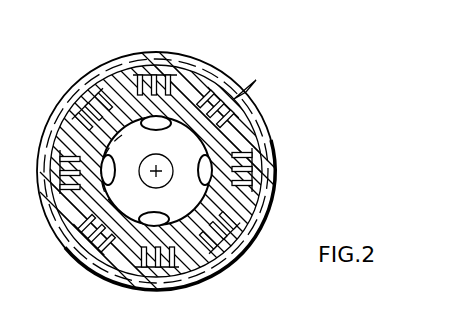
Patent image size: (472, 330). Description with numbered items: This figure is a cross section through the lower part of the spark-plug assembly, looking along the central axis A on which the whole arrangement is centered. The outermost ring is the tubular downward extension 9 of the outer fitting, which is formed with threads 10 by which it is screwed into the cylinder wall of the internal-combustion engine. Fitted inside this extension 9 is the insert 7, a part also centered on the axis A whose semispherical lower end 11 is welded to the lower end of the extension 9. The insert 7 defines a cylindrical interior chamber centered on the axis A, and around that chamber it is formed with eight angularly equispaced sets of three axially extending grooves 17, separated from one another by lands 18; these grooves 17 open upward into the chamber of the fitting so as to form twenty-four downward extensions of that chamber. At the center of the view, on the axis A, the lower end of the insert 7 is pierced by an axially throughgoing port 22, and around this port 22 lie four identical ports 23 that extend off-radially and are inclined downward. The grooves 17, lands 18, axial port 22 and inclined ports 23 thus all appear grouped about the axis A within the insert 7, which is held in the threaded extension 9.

The insert 7 is at (212, 68).
The tubular downward extension 9 is at (183, 53).
The threads 10 is at (87, 82).
The semispherical lower end 11 is at (255, 153).
The axially extending grooves 17 is at (243, 97).
The lands 18 is at (248, 132).
The axially throughgoing port 22 is at (166, 181).
The ports 23 is at (122, 268).
The axis A is at (150, 166).